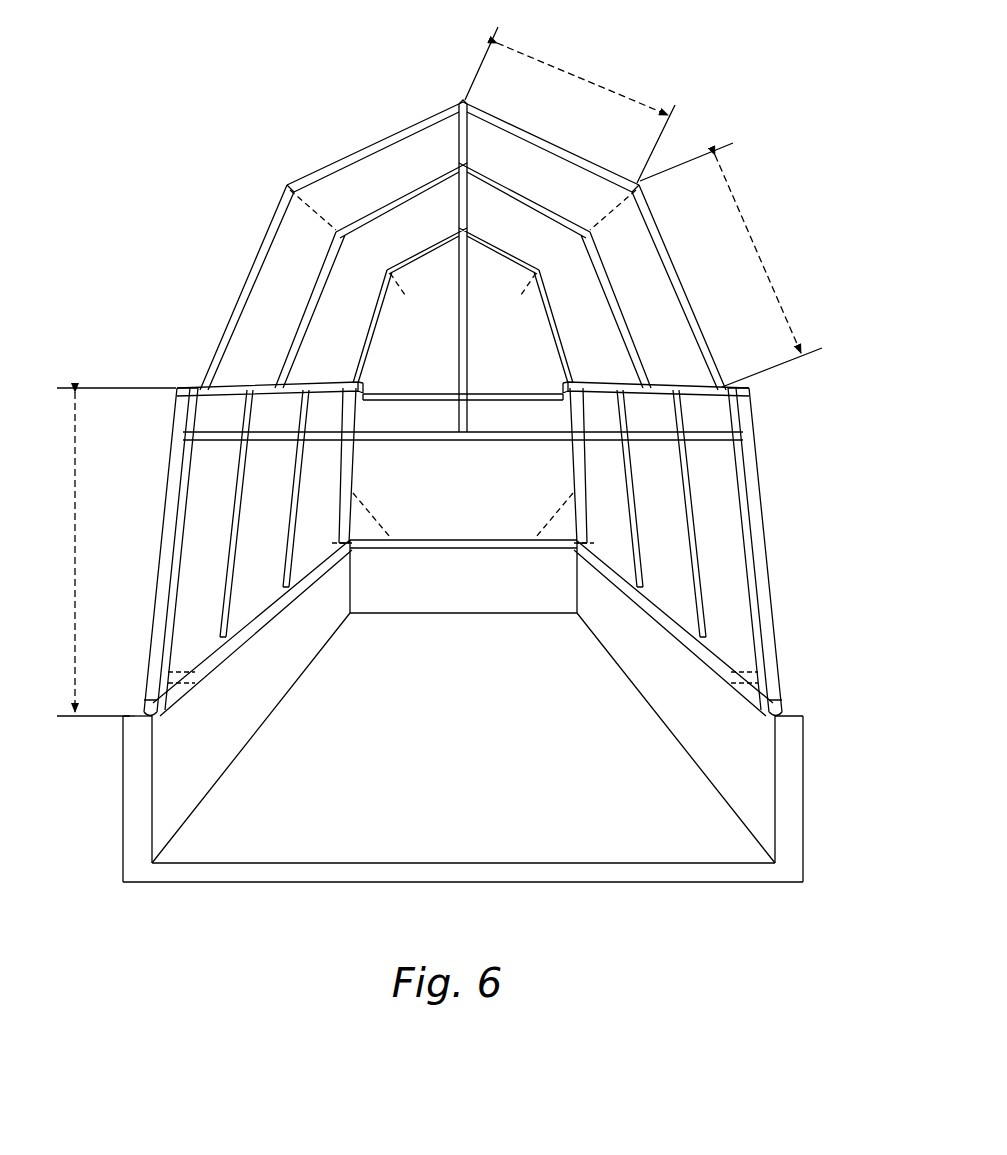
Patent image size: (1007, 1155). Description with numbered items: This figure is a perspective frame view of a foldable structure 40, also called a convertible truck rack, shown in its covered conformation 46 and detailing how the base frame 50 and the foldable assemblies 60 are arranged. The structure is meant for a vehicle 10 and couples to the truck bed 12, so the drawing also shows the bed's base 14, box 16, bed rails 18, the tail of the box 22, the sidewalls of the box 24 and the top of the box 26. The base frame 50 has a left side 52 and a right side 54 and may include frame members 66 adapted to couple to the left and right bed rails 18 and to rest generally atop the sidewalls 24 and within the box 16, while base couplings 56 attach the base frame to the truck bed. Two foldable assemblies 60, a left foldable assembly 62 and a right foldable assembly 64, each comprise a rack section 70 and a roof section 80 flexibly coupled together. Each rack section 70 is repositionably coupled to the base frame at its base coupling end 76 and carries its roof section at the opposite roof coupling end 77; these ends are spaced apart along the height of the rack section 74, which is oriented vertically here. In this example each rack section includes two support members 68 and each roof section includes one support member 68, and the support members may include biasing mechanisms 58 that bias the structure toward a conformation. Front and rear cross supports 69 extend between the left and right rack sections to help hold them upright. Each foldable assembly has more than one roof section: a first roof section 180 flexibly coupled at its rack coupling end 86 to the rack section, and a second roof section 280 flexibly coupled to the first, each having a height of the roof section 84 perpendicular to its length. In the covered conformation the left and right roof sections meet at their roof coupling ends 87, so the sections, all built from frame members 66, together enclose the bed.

The vehicle 10 is at (142, 30).
The truck bed 12 is at (807, 822).
The base 14 is at (657, 863).
The box 16 is at (805, 790).
The bedrail 18 is at (140, 727).
The tail of the box 22 is at (122, 852).
The sidewall of the box 24 is at (122, 808).
The top of the box 26 is at (137, 704).
The foldable structure 40 is at (147, 80).
The covered conformation 46 is at (152, 125).
The base frame 50 is at (187, 706).
The left side 52 is at (197, 683).
The right side 54 is at (733, 688).
The base coupling 56 is at (185, 668).
The biasing mechanism 58 is at (380, 527).
The foldable assembly 60 is at (145, 525).
The left foldable assembly 62 is at (167, 460).
The right foldable assembly 64 is at (760, 440).
The frame member 66 is at (228, 312).
The support member 68 is at (287, 550).
The cross support 69 is at (383, 452).
The rack section 70 is at (160, 566).
The height of the rack section 74 is at (75, 603).
The base coupling end 76 is at (140, 690).
The roof coupling end 77 is at (176, 396).
The roof section 80 is at (260, 240).
The height of the roof section 84 is at (575, 78).
The rack coupling end 86 is at (197, 380).
The roof coupling end 87 is at (292, 182).
The first roof section 180 is at (238, 283).
The second roof section 280 is at (378, 140).